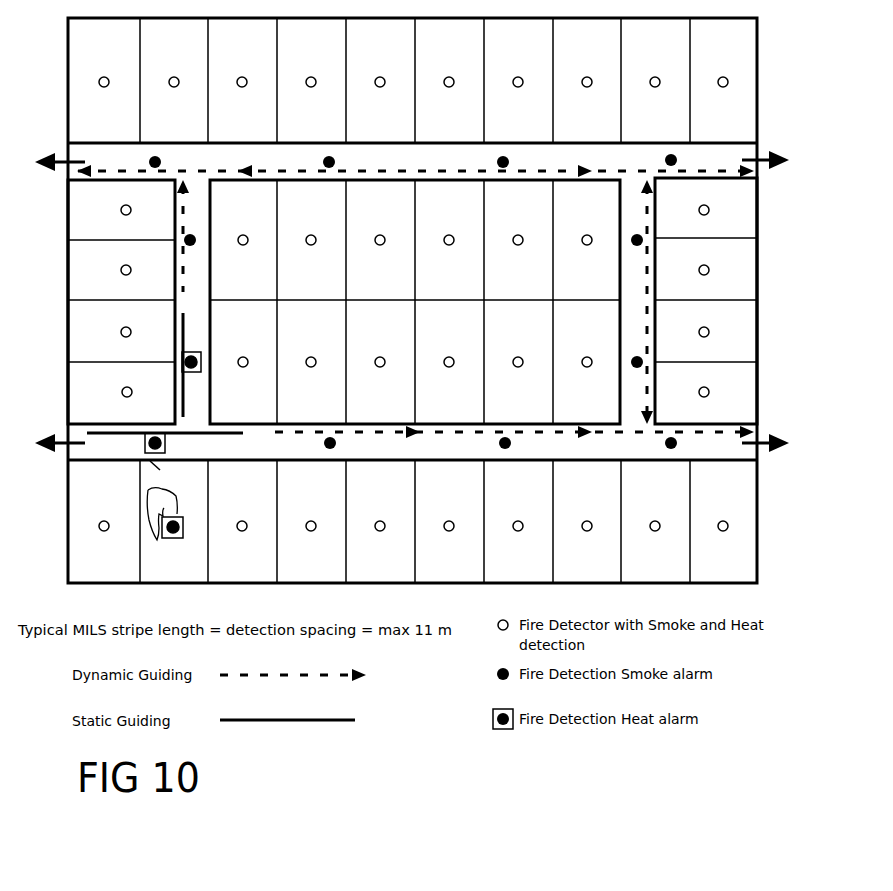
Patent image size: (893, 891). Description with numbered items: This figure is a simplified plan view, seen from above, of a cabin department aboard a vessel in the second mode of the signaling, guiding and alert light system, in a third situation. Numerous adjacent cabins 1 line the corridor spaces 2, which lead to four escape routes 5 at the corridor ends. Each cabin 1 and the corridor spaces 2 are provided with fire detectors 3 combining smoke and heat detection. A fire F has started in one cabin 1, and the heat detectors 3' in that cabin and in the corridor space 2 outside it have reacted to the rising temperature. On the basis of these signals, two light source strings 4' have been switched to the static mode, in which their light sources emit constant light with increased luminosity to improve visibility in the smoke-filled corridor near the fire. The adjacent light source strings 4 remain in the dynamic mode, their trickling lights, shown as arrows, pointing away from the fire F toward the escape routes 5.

The cabin 1 is at (99, 130).
The corridor space 2 is at (644, 319).
The fire detector 3 is at (414, 304).
The temperature-sensitive detector 3' is at (177, 432).
The light source string 4 is at (415, 303).
The light source string in static mode 4' is at (165, 387).
The escape route 5 is at (43, 159).
The fire F is at (161, 505).